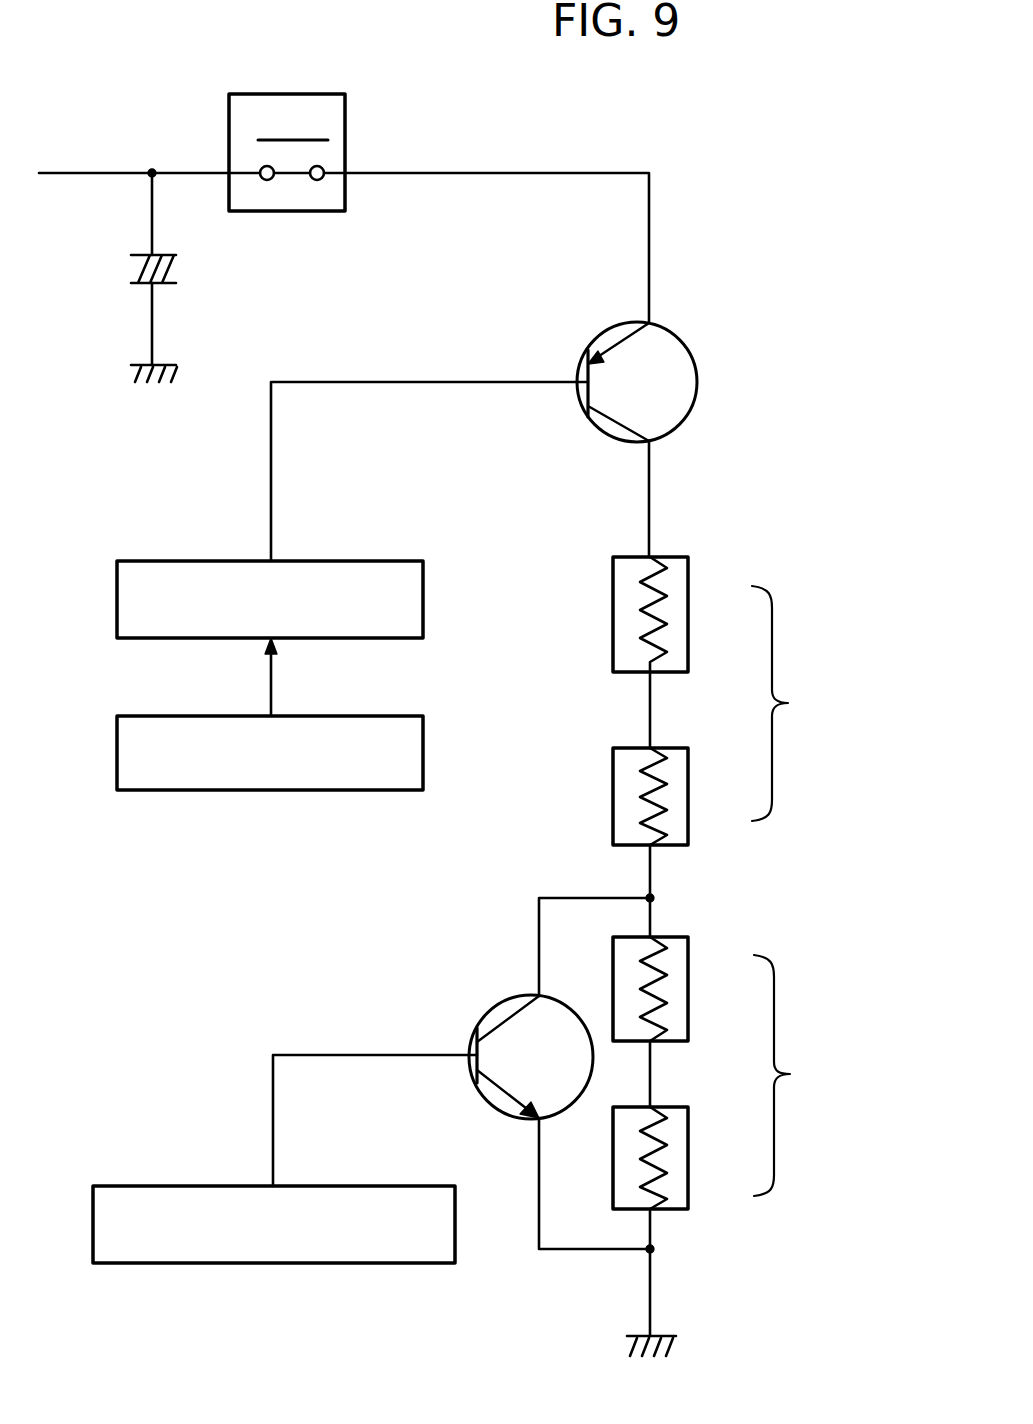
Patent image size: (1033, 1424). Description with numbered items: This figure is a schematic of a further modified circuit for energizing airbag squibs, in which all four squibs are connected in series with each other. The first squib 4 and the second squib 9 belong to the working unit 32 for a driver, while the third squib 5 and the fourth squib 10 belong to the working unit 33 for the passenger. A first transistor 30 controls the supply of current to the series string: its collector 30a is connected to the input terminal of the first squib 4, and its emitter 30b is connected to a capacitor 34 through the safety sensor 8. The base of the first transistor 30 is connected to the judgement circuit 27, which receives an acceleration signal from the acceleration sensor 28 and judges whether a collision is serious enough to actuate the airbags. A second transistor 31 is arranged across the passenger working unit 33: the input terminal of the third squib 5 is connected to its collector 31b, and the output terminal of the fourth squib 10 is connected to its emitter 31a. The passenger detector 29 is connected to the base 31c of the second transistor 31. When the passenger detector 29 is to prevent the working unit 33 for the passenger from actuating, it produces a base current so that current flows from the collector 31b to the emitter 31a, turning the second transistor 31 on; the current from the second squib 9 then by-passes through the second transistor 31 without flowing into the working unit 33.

The safety sensor 8 is at (313, 94).
The capacitor 34 is at (165, 251).
The first transistor 30 is at (698, 381).
The collector 30a is at (652, 443).
The emitter 30b is at (651, 323).
The judgement circuit 27 is at (150, 561).
The acceleration sensor 28 is at (148, 716).
The passenger detector 29 is at (145, 1186).
The first squib 4 is at (690, 611).
The second squib 9 is at (690, 800).
The working unit for a driver 32 is at (798, 703).
The third squib 5 is at (690, 987).
The fourth squib 10 is at (690, 1170).
The working unit for the passenger 33 is at (801, 1075).
The second transistor 31 is at (487, 1010).
The emitter 31a is at (538, 1120).
The collector 31b is at (537, 993).
The base 31c is at (472, 1051).